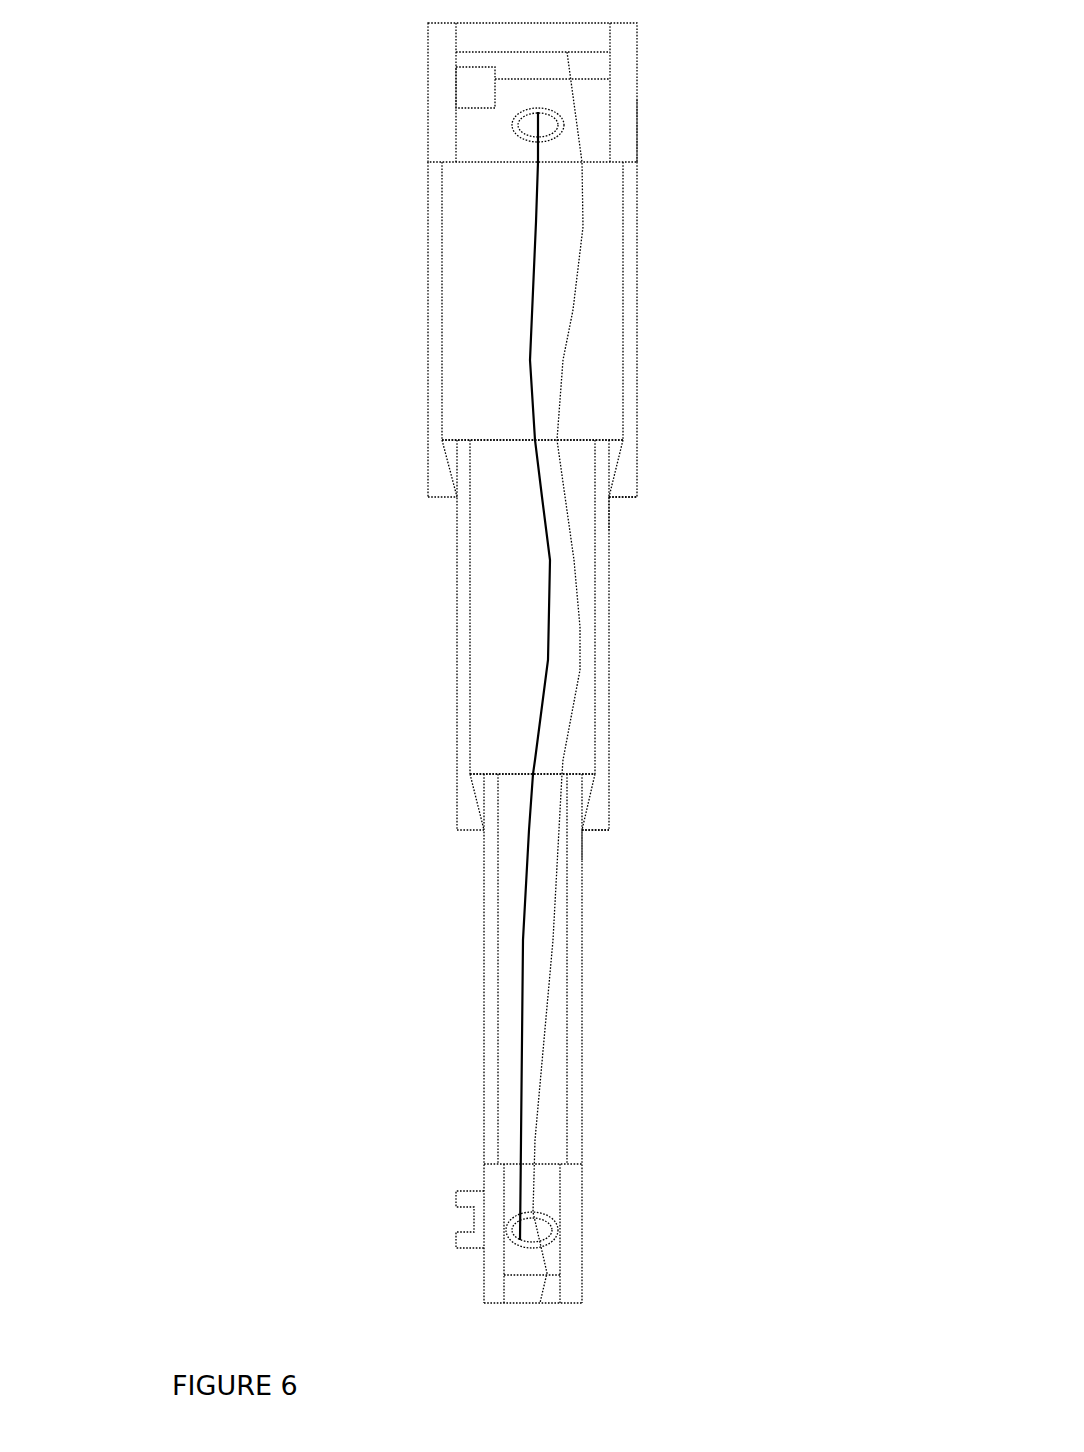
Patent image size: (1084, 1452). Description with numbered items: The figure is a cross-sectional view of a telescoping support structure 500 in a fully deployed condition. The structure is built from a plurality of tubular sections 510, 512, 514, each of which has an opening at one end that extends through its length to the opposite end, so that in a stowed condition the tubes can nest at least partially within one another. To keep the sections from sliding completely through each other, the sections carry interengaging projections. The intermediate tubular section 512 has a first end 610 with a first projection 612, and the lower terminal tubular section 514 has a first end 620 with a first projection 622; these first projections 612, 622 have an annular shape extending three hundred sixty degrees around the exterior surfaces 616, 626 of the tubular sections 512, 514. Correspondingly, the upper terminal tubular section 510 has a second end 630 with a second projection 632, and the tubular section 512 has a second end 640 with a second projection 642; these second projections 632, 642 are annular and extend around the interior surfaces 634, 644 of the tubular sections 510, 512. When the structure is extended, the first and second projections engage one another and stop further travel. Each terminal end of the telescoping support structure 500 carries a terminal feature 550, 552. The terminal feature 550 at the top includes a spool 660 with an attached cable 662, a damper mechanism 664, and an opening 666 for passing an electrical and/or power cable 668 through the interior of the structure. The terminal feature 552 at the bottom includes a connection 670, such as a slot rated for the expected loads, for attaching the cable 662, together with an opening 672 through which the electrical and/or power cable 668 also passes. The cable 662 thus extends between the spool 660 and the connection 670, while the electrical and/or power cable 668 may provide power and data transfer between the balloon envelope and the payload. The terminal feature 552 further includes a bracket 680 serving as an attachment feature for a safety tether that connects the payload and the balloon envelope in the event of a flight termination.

The telescoping support structure 500 is at (526, 688).
The tubular section 510 is at (637, 320).
The tubular section 512 is at (610, 674).
The tubular section 514 is at (582, 1085).
The terminal feature 550 is at (637, 148).
The terminal feature 552 is at (582, 1190).
The first end 610 is at (511, 428).
The first projection 612 is at (453, 460).
The exterior surface 616 is at (457, 630).
The first end 620 is at (533, 762).
The first projection 622 is at (470, 785).
The exterior surface 626 is at (483, 962).
The second end 630 is at (609, 500).
The second projection 632 is at (428, 492).
The interior surface 634 is at (483, 277).
The second end 640 is at (585, 833).
The second projection 642 is at (455, 826).
The interior surface 644 is at (497, 588).
The spool 660 is at (610, 68).
The cable 662 is at (583, 227).
The damper mechanism 664 is at (456, 93).
The opening 666 is at (512, 133).
The electrical and/or power cable 668 is at (535, 222).
The connection 670 is at (583, 1293).
The opening 672 is at (560, 1240).
The bracket 680 is at (455, 1192).